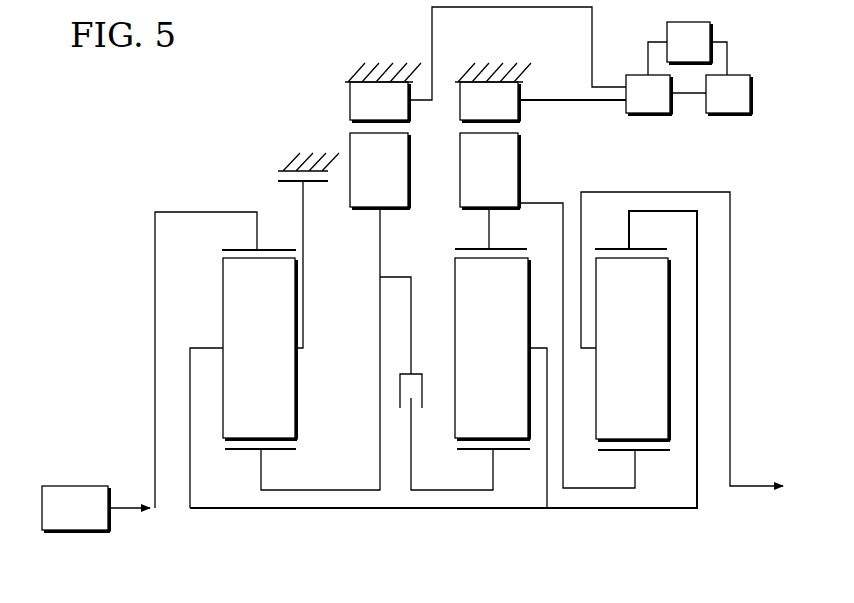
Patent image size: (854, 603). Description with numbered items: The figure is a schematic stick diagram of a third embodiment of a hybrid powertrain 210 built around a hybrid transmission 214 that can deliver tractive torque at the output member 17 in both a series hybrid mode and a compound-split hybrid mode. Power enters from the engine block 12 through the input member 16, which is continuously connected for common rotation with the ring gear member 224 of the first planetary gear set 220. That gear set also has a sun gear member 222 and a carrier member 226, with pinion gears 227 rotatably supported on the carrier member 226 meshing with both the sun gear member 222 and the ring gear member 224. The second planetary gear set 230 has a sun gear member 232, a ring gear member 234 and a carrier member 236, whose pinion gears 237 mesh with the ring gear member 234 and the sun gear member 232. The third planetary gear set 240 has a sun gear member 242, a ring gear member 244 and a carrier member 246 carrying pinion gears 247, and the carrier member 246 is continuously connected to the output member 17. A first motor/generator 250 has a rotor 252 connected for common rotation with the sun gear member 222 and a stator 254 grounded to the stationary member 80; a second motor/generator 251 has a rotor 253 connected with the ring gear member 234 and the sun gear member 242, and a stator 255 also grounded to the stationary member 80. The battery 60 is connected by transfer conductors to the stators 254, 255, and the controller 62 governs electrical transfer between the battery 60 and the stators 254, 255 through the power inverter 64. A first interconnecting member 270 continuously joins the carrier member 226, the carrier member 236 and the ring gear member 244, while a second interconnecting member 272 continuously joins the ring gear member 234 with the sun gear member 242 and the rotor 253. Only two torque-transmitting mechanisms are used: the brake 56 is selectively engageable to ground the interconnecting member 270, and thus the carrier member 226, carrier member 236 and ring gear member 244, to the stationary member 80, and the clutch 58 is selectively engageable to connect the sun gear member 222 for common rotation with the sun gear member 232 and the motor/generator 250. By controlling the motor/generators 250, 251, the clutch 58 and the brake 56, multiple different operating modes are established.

The fluid source 12 is at (62, 518).
The input member 16 is at (128, 506).
The output member 17 is at (765, 485).
The brake 56 is at (333, 182).
The clutch 58 is at (402, 413).
The battery 60 is at (676, 52).
The controller 62 is at (716, 104).
The power inverter 64 is at (636, 104).
The stationary member 80 is at (295, 160).
The hybrid powertrain 210 is at (83, 357).
The hybrid transmission 214 is at (230, 144).
The first planetary gear set 220 is at (246, 469).
The sun gear member 222 is at (283, 452).
The ring gear member 224 is at (240, 248).
The carrier member 226 is at (206, 347).
The pinion gears 227 is at (240, 358).
The second planetary gear set 230 is at (512, 468).
The sun gear member 232 is at (475, 452).
The ring gear member 234 is at (500, 247).
The carrier member 236 is at (539, 347).
The pinion gears 237 is at (472, 358).
The third planetary gear set 240 is at (616, 469).
The sun gear member 242 is at (647, 452).
The ring gear member 244 is at (613, 248).
The carrier member 246 is at (590, 350).
The pinion gears 247 is at (613, 358).
The first motor/generator 250 is at (425, 135).
The second motor/generator 251 is at (540, 130).
The rotor 252 is at (360, 180).
The rotor 253 is at (470, 180).
The stator 254 is at (360, 111).
The stator 255 is at (470, 111).
The first interconnecting member 270 is at (452, 510).
The second interconnecting member 272 is at (618, 492).